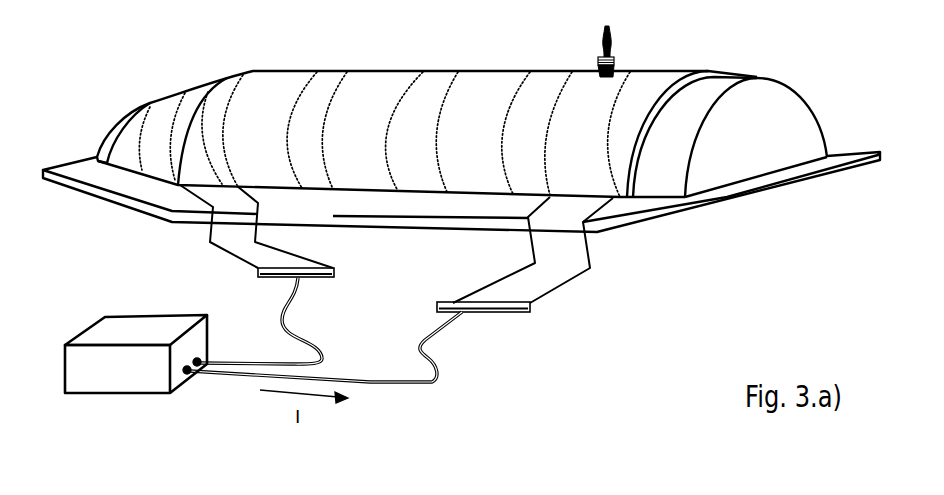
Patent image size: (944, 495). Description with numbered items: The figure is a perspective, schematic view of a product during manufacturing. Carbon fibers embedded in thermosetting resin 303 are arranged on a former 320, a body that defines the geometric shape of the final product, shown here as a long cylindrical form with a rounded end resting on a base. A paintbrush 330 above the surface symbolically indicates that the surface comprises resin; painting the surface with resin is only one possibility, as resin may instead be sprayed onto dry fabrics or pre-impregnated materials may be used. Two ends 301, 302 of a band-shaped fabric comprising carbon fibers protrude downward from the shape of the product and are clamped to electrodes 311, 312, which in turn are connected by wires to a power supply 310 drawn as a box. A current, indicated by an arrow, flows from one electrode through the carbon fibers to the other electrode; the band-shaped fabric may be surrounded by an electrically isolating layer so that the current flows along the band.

The end of band-shaped fabric 301 is at (587, 277).
The end of band-shaped fabric 302 is at (210, 252).
The carbon fibers embedded in thermosetting resin 303 is at (437, 78).
The power supply 310 is at (118, 393).
The electrode 311 is at (500, 312).
The electrode 312 is at (266, 279).
The former 320 is at (722, 83).
The paintbrush 330 is at (627, 49).